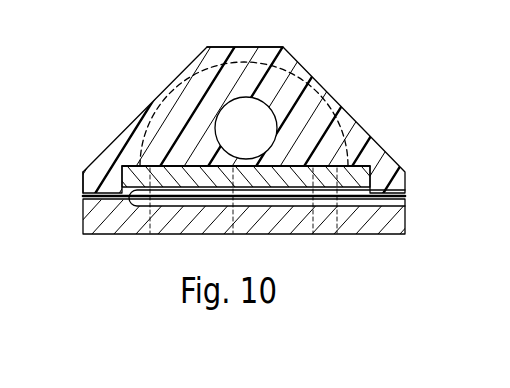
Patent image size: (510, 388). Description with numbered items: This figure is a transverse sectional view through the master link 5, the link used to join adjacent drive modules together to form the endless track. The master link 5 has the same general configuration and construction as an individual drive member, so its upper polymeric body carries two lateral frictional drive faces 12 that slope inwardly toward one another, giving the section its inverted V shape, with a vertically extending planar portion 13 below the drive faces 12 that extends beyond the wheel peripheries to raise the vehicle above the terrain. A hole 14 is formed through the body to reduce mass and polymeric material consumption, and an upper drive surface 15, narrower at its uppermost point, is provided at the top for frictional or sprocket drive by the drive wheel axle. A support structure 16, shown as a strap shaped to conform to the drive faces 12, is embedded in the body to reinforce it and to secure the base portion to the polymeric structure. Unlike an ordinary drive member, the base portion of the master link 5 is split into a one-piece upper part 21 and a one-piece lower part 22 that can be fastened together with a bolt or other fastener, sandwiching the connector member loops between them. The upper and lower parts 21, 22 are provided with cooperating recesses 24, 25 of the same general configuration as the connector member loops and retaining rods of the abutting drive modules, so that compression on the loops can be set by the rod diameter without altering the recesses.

The master link 5 is at (341, 73).
The drive face 12 is at (136, 118).
The vertically extending planar portion 13 is at (82, 183).
The hole 14 is at (233, 127).
The upper drive surface 15 is at (243, 47).
The support structure 16 is at (290, 98).
The upper part of master link base portion 21 is at (367, 172).
The lower part of master link base portion 22 is at (385, 223).
The recess 24 is at (121, 170).
The recess 25 is at (96, 206).